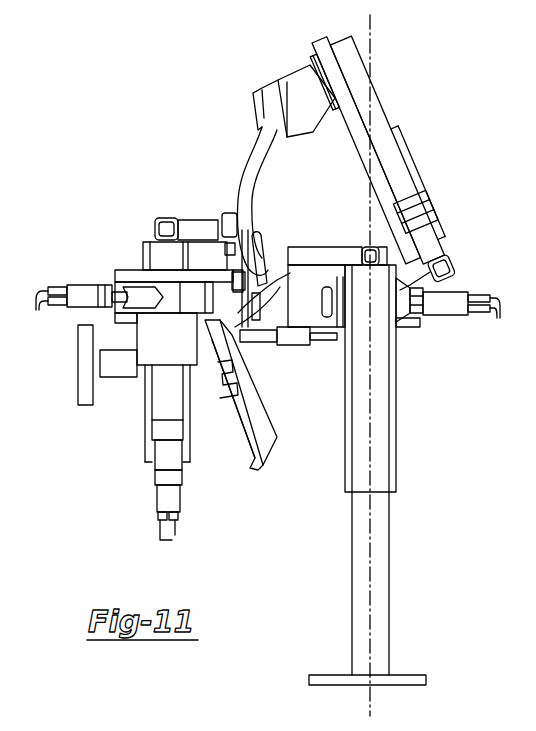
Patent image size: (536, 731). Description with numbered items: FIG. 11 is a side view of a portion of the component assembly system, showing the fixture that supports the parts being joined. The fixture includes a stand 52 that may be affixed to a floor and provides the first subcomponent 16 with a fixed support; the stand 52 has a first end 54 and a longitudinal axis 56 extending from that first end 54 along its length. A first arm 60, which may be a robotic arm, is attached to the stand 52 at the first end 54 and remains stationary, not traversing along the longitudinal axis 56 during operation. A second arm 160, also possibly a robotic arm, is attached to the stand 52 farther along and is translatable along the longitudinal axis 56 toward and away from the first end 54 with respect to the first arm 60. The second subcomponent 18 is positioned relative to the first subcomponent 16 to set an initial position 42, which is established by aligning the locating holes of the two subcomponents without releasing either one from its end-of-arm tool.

The first subcomponent 16 is at (247, 197).
The second subcomponent 18 is at (285, 257).
The initial position 42 is at (278, 505).
The stand 52 is at (390, 587).
The first end 54 is at (437, 468).
The longitudinal axis 56 is at (394, 31).
The first arm 60 is at (365, 248).
The second arm 160 is at (447, 307).